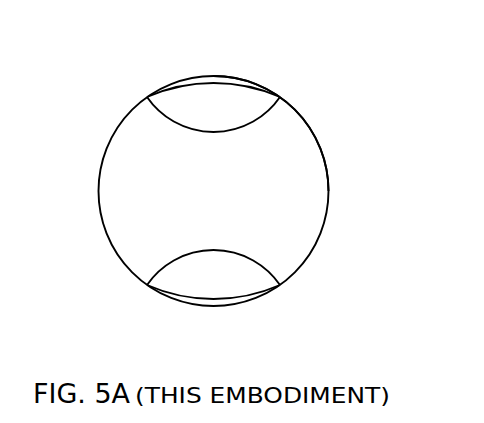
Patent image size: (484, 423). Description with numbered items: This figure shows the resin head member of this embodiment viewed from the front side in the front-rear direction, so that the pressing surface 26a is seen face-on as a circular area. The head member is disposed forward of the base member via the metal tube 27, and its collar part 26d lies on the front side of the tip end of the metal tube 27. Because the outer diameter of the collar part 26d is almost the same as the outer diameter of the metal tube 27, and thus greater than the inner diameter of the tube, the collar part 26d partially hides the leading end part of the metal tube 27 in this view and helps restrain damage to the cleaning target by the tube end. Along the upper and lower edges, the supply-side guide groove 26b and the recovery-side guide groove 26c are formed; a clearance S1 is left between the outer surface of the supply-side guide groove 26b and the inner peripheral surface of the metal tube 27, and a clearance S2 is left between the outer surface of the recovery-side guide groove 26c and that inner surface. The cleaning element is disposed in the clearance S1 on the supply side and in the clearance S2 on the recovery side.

The pressing surface 26a is at (315, 189).
The supply-side guide groove 26b is at (178, 120).
The recovery-side guide groove 26c is at (178, 262).
The collar part 26d is at (315, 133).
The metal tube 27 is at (250, 87).
The clearance S1 is at (209, 87).
The clearance S2 is at (212, 293).